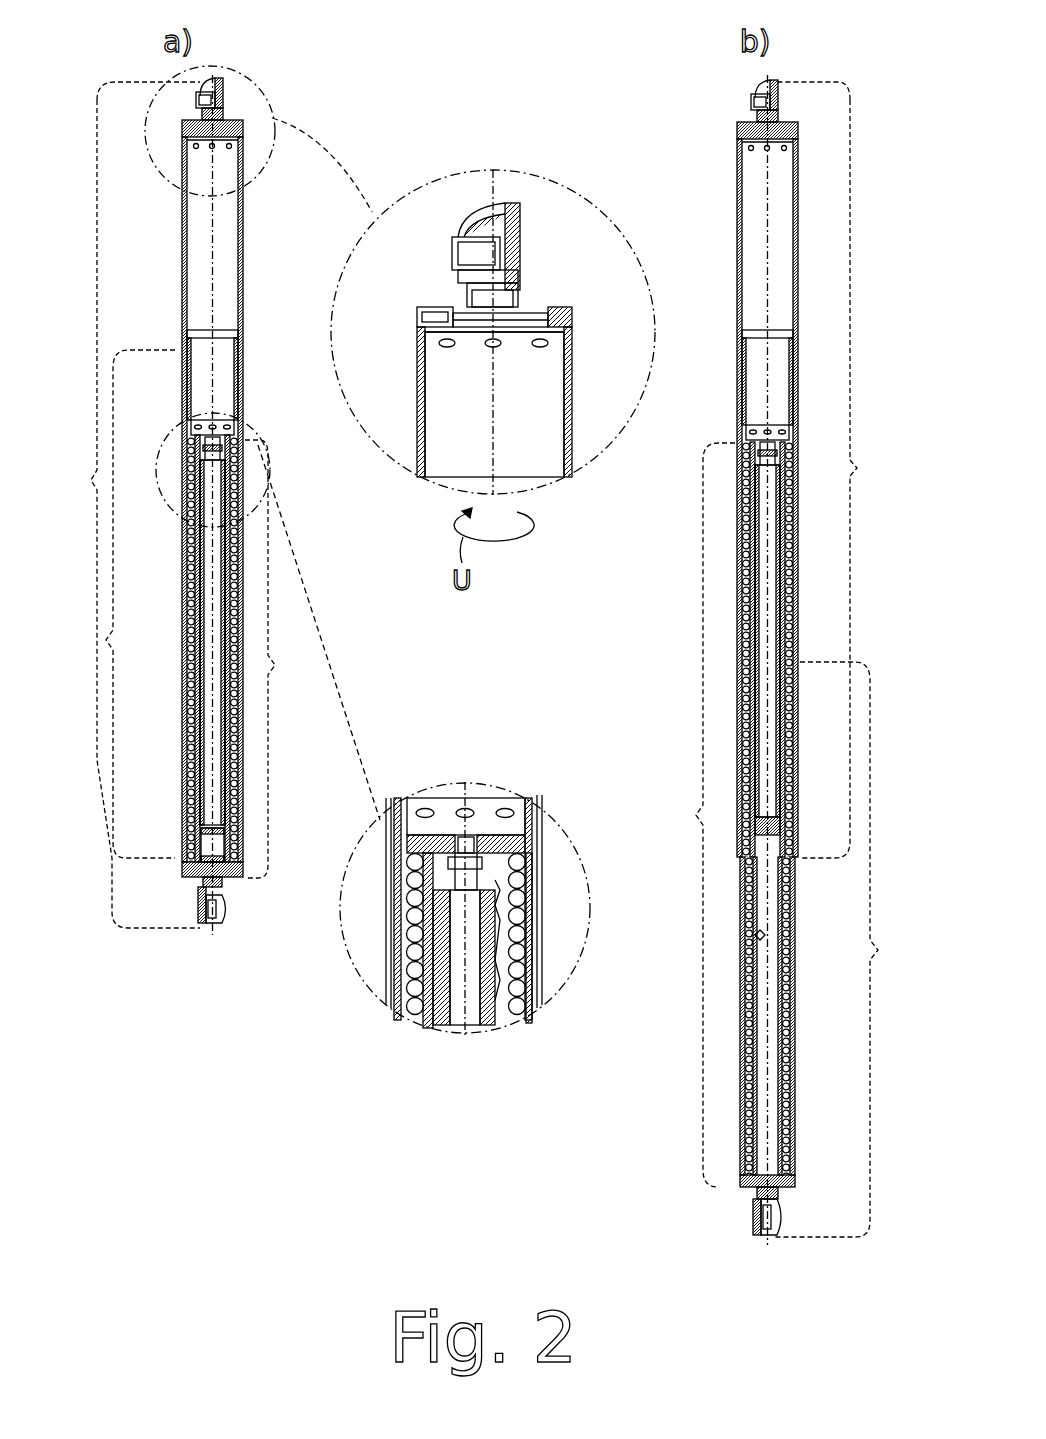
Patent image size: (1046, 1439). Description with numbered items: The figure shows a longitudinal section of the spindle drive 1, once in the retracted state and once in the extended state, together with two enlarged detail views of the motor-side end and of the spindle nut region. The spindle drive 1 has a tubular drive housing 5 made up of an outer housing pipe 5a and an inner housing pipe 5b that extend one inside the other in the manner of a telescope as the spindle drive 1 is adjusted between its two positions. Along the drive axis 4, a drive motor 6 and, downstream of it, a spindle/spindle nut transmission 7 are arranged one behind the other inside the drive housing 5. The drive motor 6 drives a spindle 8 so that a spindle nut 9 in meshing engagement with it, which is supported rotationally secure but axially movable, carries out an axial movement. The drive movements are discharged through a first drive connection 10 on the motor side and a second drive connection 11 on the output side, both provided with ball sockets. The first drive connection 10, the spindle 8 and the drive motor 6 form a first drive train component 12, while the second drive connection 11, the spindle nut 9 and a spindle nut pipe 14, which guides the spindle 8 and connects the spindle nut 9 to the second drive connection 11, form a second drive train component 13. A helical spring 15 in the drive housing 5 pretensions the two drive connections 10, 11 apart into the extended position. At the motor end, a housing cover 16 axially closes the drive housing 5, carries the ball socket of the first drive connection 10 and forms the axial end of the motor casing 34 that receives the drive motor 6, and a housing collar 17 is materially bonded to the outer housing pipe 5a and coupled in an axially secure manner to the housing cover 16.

The spindle drive 1 is at (103, 68).
The drive axis 4 is at (205, 940).
The drive housing 5 is at (182, 312).
The outer housing pipe 5a is at (182, 276).
The inner housing pipe 5b is at (185, 866).
The drive motor 6 is at (198, 215).
The spindle/spindle nut transmission 7 is at (490, 813).
The spindle 8 is at (185, 618).
The spindle nut 9 is at (180, 490).
The first drive connection 10 is at (222, 85).
The second drive connection 11 is at (215, 928).
The first drive train component 12 is at (468, 514).
The second drive train component 13 is at (490, 793).
The spindle nut pipe 14 is at (448, 1018).
The helical spring 15 is at (518, 1018).
The housing cover 16 is at (542, 308).
The housing collar 17 is at (565, 318).
The motor casing 34 is at (445, 452).